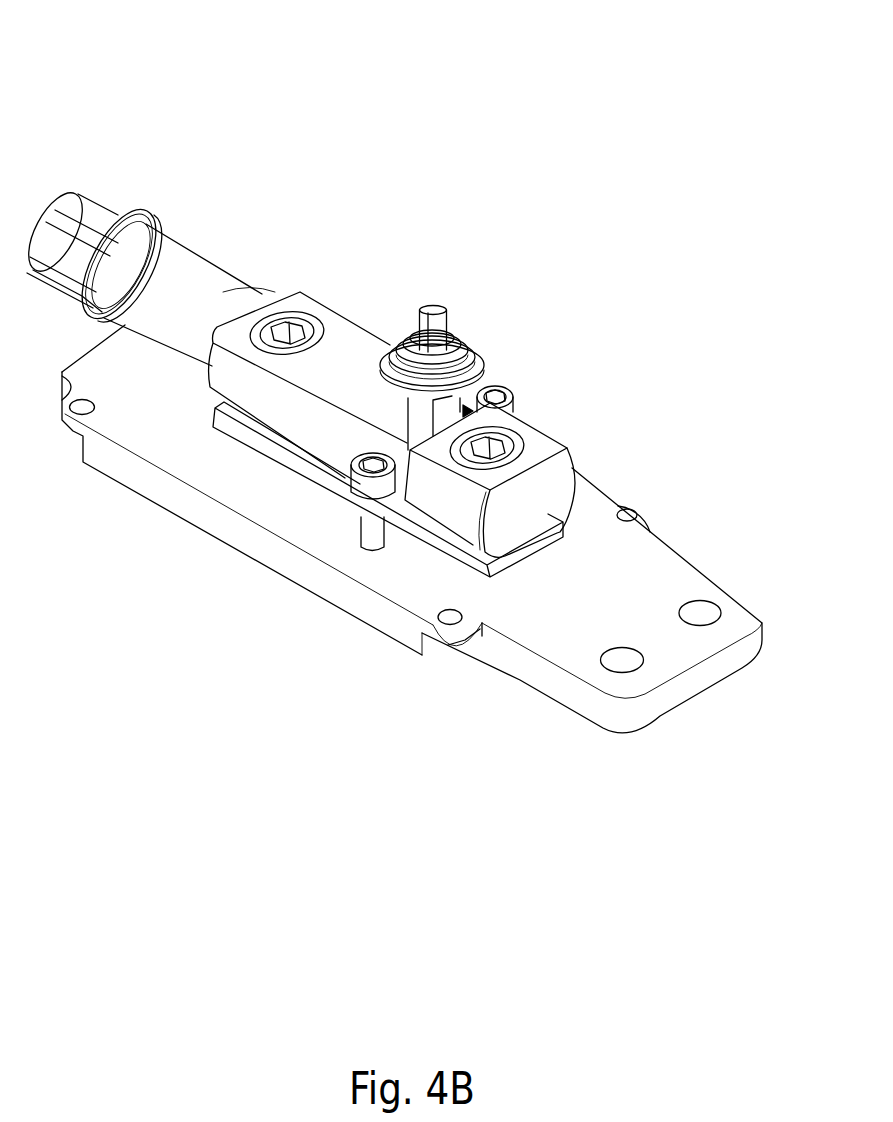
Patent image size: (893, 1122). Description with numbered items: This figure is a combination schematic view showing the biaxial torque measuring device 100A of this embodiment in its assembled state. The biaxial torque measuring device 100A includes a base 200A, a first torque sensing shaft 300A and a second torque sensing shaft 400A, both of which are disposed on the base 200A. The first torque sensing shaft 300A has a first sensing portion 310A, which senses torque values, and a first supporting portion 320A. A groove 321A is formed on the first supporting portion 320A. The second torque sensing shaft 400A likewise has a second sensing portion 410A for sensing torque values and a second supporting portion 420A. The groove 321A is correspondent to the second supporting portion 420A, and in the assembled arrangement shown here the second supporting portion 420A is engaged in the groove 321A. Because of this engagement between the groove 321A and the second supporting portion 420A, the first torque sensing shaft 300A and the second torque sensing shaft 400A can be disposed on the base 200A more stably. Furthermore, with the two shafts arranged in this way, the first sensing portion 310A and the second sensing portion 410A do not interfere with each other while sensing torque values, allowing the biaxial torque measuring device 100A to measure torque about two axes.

The biaxial torque measuring device 100A is at (112, 27).
The base 200A is at (745, 617).
The first torque sensing shaft 300A is at (205, 272).
The first sensing portion 310A is at (84, 202).
The first supporting portion 320A is at (545, 482).
The groove 321A is at (387, 442).
The second torque sensing shaft 400A is at (505, 416).
The second sensing portion 410A is at (433, 306).
The second supporting portion 420A is at (350, 492).